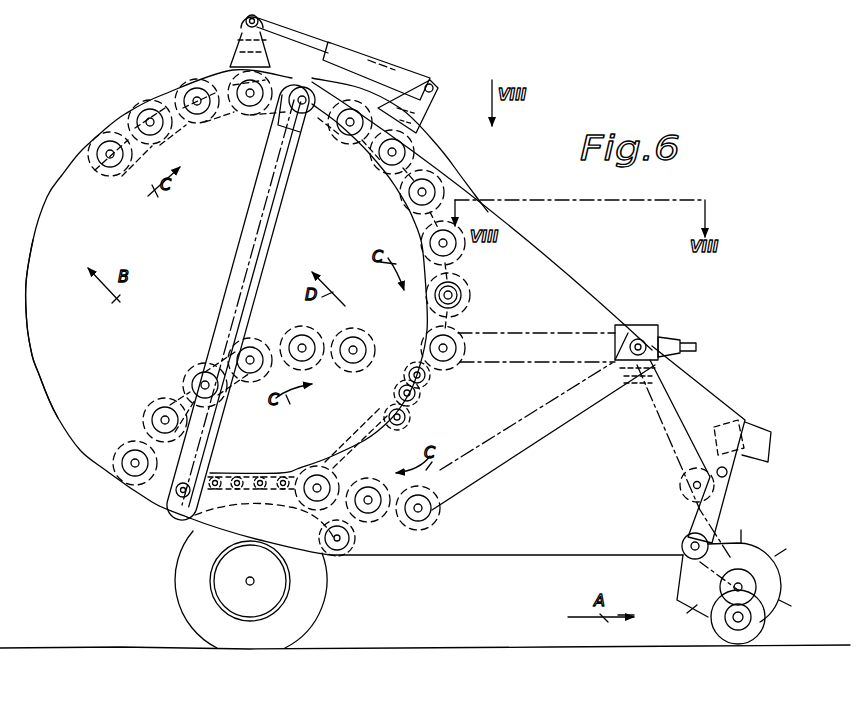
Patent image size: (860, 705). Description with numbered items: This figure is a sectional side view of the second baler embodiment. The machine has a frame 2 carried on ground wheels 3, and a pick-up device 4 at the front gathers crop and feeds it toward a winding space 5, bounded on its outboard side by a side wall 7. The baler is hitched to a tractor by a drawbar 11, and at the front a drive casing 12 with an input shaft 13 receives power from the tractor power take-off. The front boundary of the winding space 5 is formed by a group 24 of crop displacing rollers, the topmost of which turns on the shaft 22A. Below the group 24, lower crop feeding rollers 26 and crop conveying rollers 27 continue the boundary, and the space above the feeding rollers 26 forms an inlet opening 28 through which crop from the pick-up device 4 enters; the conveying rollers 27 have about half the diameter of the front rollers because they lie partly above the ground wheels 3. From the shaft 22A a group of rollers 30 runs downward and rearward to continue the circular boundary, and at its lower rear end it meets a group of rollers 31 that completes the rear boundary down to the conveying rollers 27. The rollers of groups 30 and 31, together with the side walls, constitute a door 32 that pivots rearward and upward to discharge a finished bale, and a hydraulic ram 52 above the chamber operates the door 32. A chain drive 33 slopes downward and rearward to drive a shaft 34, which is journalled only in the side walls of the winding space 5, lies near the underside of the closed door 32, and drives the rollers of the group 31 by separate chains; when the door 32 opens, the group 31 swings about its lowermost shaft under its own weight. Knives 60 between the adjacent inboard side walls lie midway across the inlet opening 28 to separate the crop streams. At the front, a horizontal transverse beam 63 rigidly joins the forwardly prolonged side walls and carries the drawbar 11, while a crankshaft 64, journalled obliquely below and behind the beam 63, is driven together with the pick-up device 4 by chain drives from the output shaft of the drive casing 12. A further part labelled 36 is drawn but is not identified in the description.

The frame 2 is at (349, 558).
The ground wheels 3 is at (176, 590).
The pick-up device 4 is at (762, 538).
The winding space 5 is at (204, 273).
The side wall 7 is at (370, 207).
The drawbar 11 is at (754, 432).
The drive casing 12 is at (648, 325).
The input shaft 13 is at (694, 343).
The shaft of top roller 22A is at (290, 113).
The group of rollers 24 is at (387, 173).
The lower crop feeding rollers 26 is at (417, 530).
The crop conveying rollers 27 is at (284, 470).
The inlet opening 28 is at (388, 470).
The group of rollers 30 is at (142, 94).
The group of rollers 31 is at (160, 396).
The door 32 is at (50, 402).
The chain drive 33 is at (252, 218).
The shaft 34 is at (138, 466).
The bale chamber side wall 36 is at (85, 203).
The hydraulic ram 52 is at (360, 52).
The knives 60 is at (340, 444).
The horizontal transverse beam 63 is at (730, 420).
The crankshaft 64 is at (697, 485).